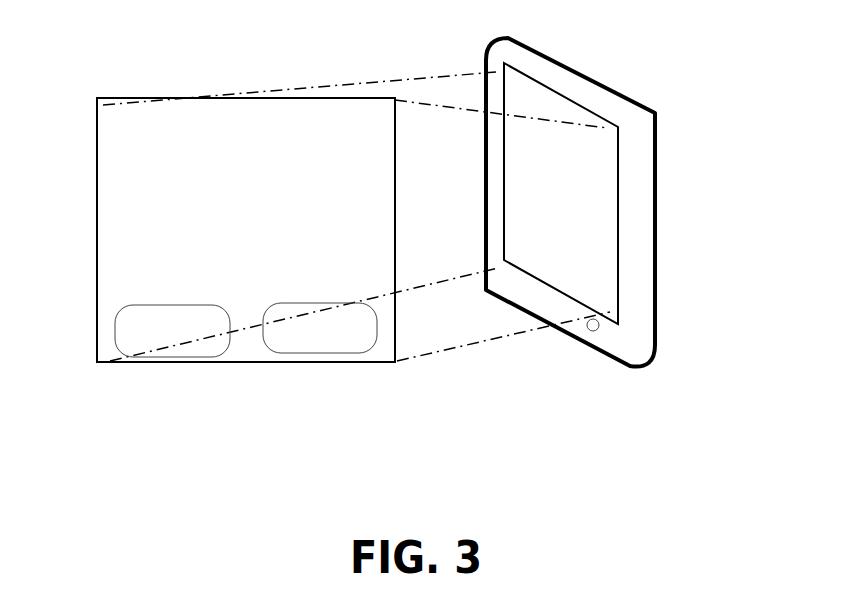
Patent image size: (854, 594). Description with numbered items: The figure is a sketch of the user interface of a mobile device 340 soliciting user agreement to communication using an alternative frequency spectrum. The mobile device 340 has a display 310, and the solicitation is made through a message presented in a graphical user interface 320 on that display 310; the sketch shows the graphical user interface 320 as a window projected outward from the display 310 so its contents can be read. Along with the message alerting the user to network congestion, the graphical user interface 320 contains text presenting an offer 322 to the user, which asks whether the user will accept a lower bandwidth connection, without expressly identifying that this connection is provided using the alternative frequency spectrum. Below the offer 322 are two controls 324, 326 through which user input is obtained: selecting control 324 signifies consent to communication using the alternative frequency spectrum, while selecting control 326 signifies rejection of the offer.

The graphical user interface 320 is at (160, 97).
The offer 322 is at (97, 226).
The control 324 is at (145, 343).
The control 326 is at (347, 345).
The mobile device 340 is at (635, 95).
The display 310 is at (595, 270).